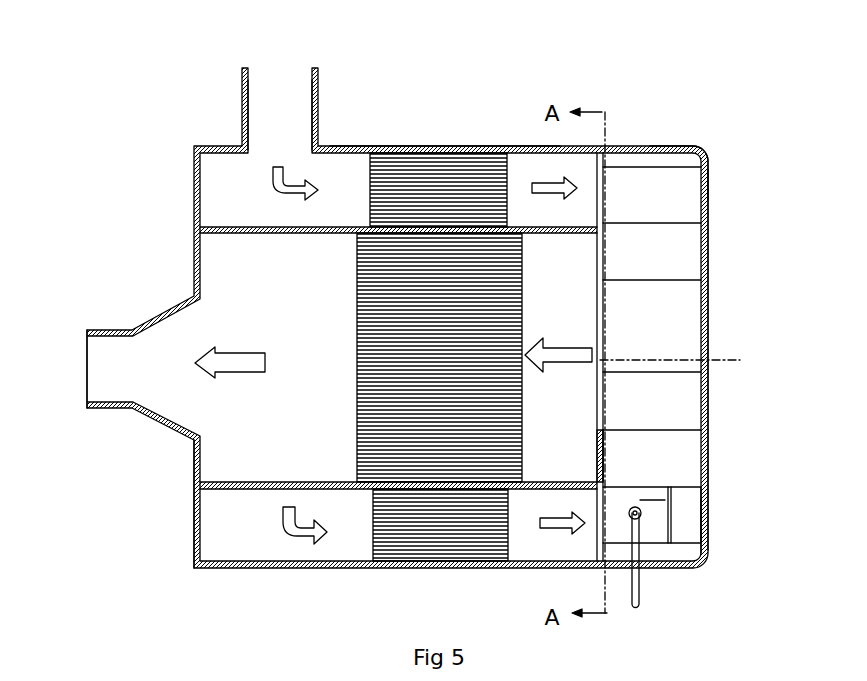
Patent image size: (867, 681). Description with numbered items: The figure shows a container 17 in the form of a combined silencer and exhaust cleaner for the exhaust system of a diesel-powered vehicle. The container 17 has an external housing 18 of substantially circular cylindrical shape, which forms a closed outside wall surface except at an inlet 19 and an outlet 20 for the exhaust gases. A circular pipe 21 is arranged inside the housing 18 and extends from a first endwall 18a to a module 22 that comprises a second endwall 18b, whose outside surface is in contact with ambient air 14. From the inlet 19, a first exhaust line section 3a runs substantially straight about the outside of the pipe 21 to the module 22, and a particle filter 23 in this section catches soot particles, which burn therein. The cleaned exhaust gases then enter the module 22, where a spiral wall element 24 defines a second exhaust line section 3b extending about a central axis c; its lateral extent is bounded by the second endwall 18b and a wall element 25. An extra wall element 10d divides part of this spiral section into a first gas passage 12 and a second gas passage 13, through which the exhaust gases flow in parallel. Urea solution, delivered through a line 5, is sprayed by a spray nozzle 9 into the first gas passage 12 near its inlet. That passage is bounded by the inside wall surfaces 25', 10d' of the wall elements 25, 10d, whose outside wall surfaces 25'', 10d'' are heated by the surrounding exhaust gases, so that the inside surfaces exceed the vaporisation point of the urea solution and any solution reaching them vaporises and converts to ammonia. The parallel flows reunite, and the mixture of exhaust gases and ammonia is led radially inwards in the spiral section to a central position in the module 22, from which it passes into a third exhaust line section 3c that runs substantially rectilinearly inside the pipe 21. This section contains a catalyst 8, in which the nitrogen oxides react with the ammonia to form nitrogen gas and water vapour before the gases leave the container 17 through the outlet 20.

The first exhaust line section 3a is at (329, 204).
The second exhaust line section 3b is at (667, 260).
The third exhaust line section 3c is at (300, 374).
The line 5 is at (632, 595).
The catalyst 8 is at (400, 378).
The spray nozzle 9 is at (628, 511).
The extra wall element 10d is at (726, 489).
The inside wall surface of extra wall element 10d' is at (638, 474).
The outside wall surface of extra wall element 10d'' is at (701, 517).
The first gas passage 12 is at (655, 525).
The second gas passage 13 is at (690, 548).
The ambient air 14 is at (622, 41).
The container 17 is at (487, 105).
The external housing 18 is at (362, 146).
The first endwall 18a is at (194, 455).
The second endwall 18b is at (708, 325).
The inlet 19 is at (278, 93).
The outlet 20 is at (112, 373).
The pipe 21 is at (310, 235).
The module 22 is at (718, 150).
The particle filter 23 is at (418, 180).
The spiral wall element 24 is at (675, 427).
The wall element 25 is at (572, 357).
The inside wall surface of wall element 25' is at (626, 439).
The outside wall surface of wall element 25'' is at (569, 456).
The central axis c is at (679, 360).